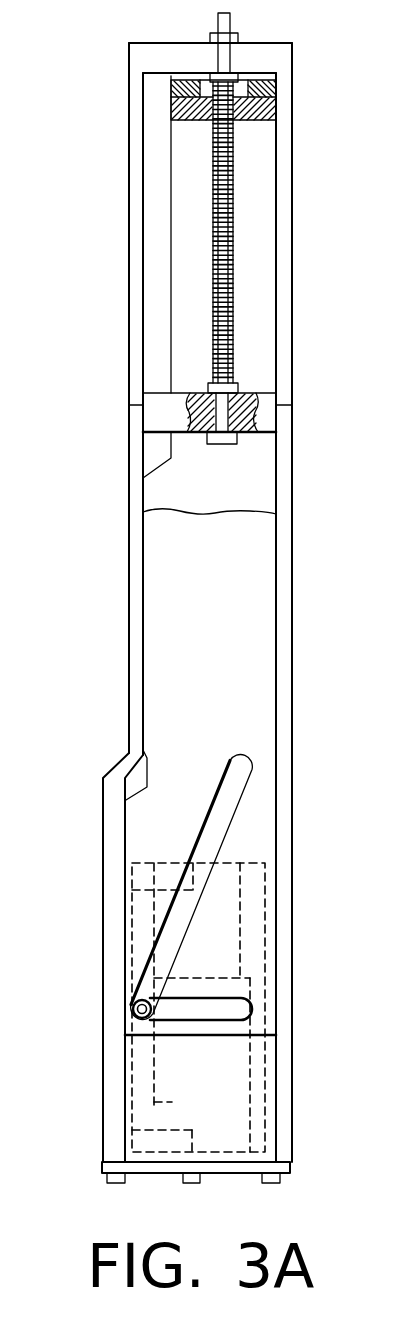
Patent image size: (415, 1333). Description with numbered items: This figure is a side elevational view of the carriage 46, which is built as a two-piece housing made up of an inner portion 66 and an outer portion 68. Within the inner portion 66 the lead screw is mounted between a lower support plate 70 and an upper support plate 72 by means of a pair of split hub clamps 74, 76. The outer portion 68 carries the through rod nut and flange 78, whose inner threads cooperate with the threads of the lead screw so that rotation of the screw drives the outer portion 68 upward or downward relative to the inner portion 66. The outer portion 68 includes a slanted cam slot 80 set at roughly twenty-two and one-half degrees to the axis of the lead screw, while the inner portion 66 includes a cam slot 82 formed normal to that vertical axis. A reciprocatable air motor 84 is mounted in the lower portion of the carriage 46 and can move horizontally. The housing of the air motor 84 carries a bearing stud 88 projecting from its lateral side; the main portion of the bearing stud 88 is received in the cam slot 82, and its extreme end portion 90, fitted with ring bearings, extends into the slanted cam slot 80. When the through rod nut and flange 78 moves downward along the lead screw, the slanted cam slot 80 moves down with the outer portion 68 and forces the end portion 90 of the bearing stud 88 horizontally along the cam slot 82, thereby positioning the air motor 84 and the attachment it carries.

The carriage 46 is at (129, 491).
The inner portion 66 is at (129, 313).
The outer portion 68 is at (240, 621).
The support plate 70 is at (263, 417).
The support plate 72 is at (178, 43).
The split hub clamp 74 is at (238, 384).
The split hub clamp 76 is at (240, 36).
The through rod nut and flange 78 is at (188, 122).
The slanted cam slot 80 is at (225, 797).
The cam slot 82 is at (203, 1019).
The air motor 84 is at (135, 1107).
The bearing stud 88 is at (131, 1016).
The end portion 90 is at (133, 1003).